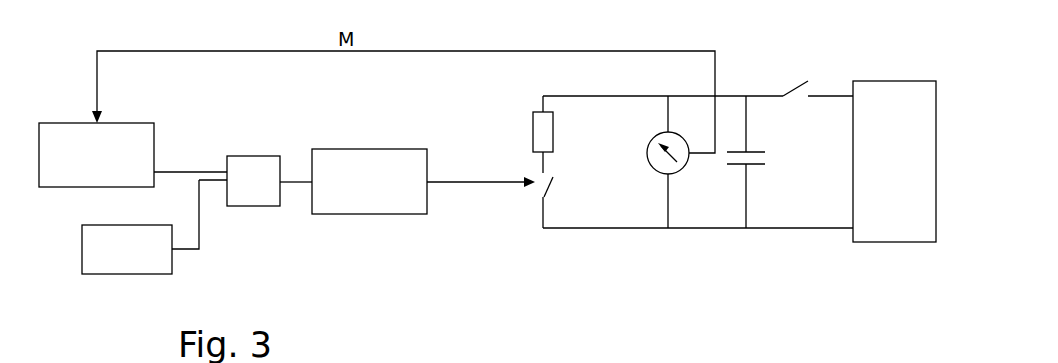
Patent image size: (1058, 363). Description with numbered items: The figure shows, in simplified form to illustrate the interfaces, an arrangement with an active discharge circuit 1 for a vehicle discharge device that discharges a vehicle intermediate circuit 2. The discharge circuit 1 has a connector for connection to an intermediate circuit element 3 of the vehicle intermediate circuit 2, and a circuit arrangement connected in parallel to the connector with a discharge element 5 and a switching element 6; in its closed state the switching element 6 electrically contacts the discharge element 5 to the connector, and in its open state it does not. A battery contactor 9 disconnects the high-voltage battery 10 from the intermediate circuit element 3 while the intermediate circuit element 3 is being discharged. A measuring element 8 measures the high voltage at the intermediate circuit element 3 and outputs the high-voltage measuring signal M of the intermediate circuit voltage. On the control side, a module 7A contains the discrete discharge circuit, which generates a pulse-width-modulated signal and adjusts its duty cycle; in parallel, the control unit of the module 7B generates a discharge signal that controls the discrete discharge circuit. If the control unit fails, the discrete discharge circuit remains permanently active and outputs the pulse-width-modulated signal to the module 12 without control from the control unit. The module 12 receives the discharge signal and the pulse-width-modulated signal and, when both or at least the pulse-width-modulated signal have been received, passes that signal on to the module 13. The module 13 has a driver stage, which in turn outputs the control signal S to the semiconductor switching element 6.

The active discharge circuit 1 is at (388, 234).
The vehicle intermediate circuit 2 is at (775, 236).
The intermediate circuit element 3 is at (752, 151).
The discharge element 5 is at (541, 125).
The switching element 6 is at (541, 188).
The module 7A is at (64, 130).
The module 7B is at (96, 248).
The measuring element 8 is at (657, 170).
The battery contactor 9 is at (786, 93).
The high-voltage battery 10 is at (891, 95).
The module 12 is at (249, 163).
The module 13 is at (368, 162).